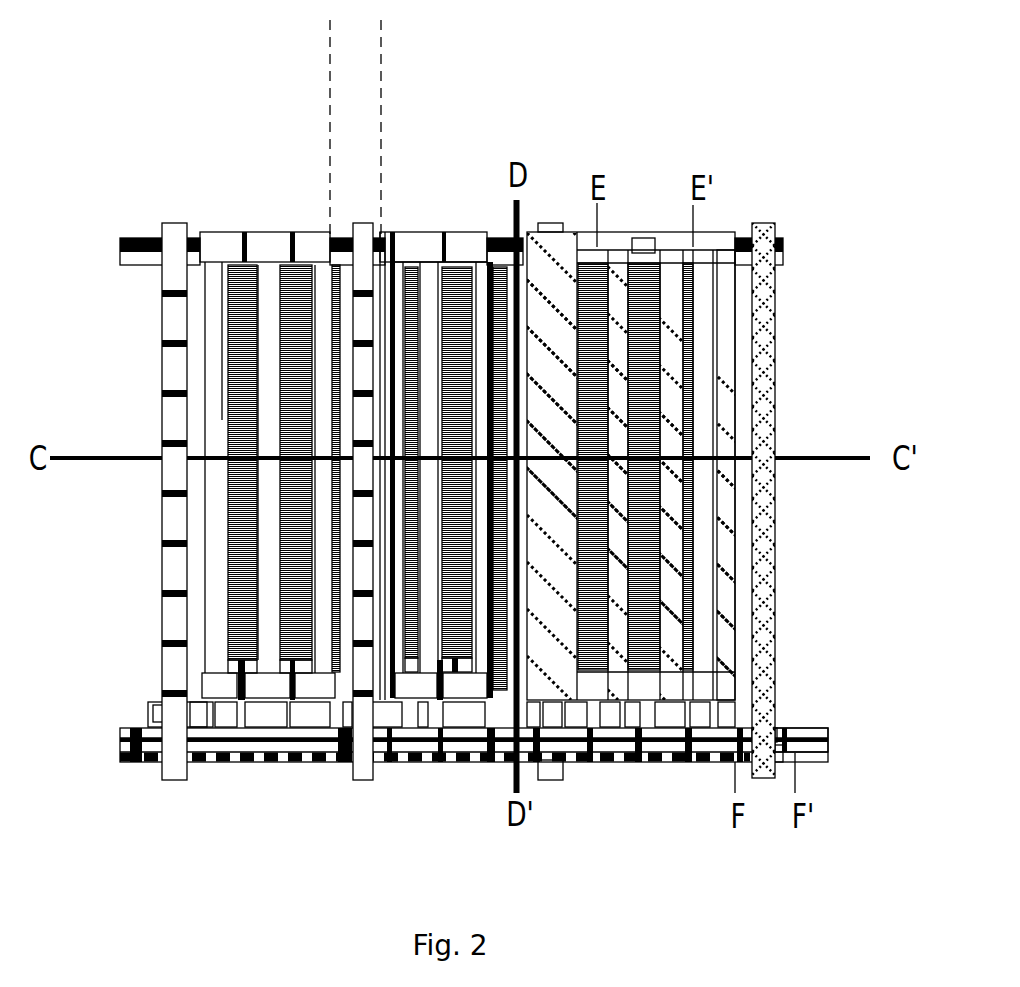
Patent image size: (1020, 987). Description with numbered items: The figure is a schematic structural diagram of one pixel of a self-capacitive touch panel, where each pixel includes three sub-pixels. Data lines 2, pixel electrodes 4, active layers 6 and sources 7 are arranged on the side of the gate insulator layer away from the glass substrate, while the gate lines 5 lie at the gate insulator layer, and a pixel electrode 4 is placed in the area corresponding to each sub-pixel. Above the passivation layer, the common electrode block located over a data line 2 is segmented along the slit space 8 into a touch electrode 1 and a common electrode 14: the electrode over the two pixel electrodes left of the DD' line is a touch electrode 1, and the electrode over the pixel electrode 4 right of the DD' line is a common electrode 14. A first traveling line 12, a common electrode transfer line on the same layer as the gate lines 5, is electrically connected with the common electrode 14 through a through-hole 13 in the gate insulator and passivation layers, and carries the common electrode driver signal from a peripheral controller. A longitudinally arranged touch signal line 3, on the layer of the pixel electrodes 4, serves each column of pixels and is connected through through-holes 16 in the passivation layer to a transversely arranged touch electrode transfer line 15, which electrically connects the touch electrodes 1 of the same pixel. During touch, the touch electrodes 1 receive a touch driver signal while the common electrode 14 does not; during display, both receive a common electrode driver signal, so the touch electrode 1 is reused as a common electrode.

The touch electrode 1 is at (270, 303).
The data line 2 is at (177, 223).
The touch signal line 3 is at (762, 223).
The pixel electrode 4 is at (600, 397).
The gate line 5 is at (120, 755).
The active layer 6 is at (162, 718).
The source 7 is at (148, 702).
The slit space 8 is at (795, 350).
The first traveling line 12 is at (120, 241).
The through-hole 13 is at (647, 238).
The common electrode 14 is at (728, 327).
The touch electrode transfer line 15 is at (805, 740).
The through-hole 16 is at (763, 745).